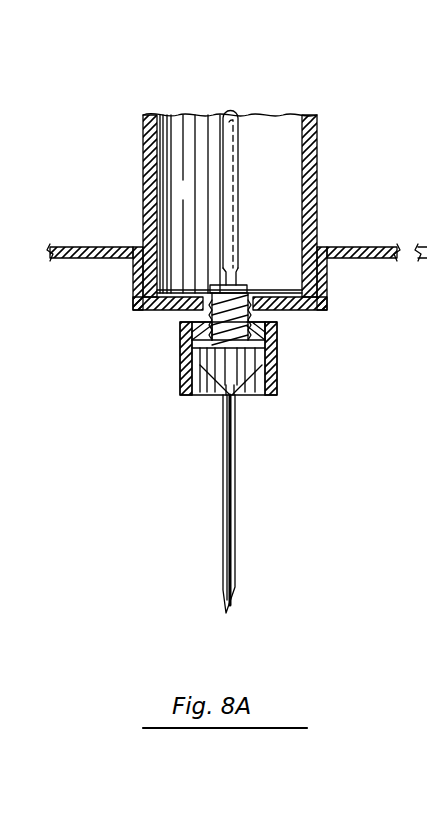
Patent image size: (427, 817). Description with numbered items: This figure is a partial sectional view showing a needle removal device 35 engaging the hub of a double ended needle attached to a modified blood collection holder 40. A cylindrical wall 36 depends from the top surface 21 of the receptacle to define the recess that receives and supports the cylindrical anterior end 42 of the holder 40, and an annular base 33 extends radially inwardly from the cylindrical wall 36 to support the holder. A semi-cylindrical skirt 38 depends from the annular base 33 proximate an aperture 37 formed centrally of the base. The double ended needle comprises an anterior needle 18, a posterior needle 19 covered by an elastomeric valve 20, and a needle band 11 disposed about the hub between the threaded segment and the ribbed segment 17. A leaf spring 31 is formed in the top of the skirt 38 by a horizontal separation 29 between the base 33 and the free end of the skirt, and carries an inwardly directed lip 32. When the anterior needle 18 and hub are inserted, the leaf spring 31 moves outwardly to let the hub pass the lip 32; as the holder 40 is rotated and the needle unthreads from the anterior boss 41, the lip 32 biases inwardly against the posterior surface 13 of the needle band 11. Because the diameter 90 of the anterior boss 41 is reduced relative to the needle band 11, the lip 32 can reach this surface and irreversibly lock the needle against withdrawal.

The needle band 11 is at (206, 398).
The posterior surface of needle band 13 is at (182, 370).
The ribbed segment 17 is at (196, 395).
The anterior needle 18 is at (225, 523).
The posterior needle 19 is at (238, 162).
The elastomeric valve 20 is at (240, 142).
The top surface 21 is at (90, 247).
The horizontal separation 29 is at (185, 323).
The leaf spring 31 is at (182, 356).
The lip 32 is at (182, 340).
The annular base 33 is at (135, 316).
The needle removal device 35 is at (135, 241).
The cylindrical wall 36 is at (133, 288).
The aperture 37 is at (266, 380).
The semi-cylindrical skirt 38 is at (182, 385).
The blood collection holder 40 is at (143, 122).
The anterior boss 41 is at (205, 280).
The anterior end 42 is at (272, 296).
The diameter of anterior boss 90 is at (252, 282).